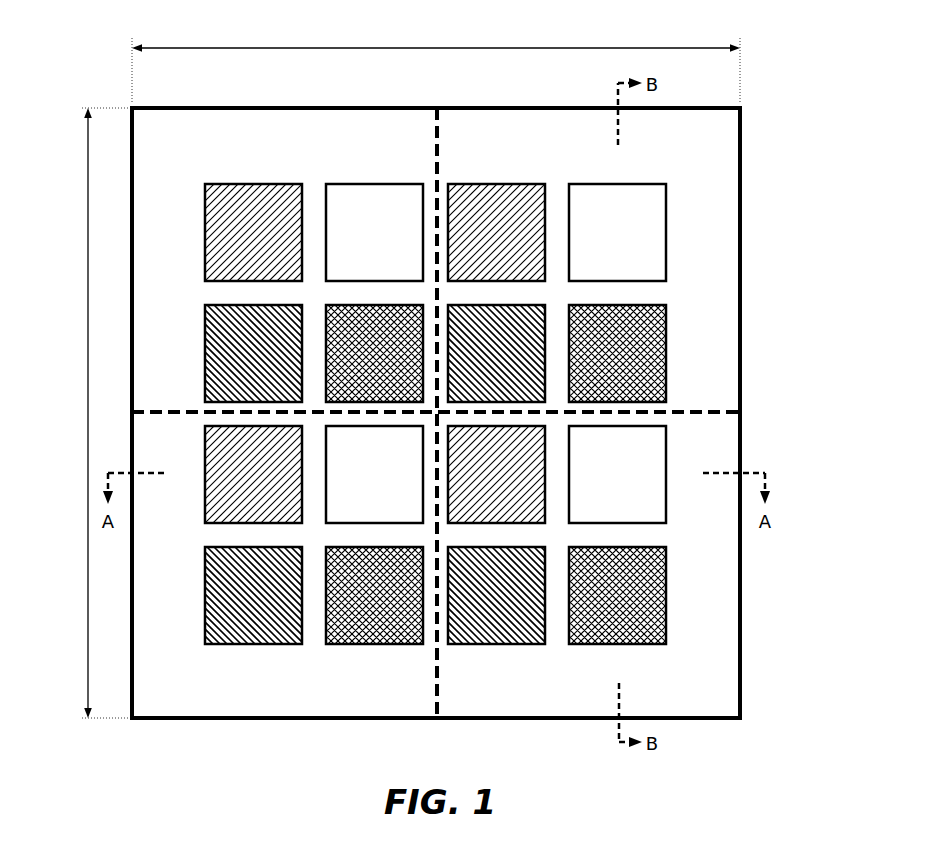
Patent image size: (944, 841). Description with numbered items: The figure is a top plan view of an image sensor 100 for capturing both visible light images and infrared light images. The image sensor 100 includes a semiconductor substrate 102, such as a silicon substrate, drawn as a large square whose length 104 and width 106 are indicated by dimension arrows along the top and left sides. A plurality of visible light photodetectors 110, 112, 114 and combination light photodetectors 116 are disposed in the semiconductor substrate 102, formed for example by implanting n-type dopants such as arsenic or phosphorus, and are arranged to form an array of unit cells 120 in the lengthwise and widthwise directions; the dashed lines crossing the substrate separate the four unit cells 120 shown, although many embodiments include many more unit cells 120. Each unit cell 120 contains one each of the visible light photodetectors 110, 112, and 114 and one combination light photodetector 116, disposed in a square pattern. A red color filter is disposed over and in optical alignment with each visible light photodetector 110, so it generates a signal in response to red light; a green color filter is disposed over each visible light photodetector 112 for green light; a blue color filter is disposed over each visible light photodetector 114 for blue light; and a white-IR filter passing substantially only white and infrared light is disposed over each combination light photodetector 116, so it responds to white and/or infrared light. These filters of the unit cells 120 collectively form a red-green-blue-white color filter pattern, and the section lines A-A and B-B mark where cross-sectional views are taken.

The image sensor 100 is at (487, 371).
The semiconductor substrate 102 is at (745, 312).
The length 104 is at (247, 45).
The width 106 is at (87, 606).
The visible light photodetector 110 is at (375, 348).
The visible light photodetector 112 is at (373, 478).
The visible light photodetector 114 is at (494, 476).
The combination light photodetector 116 is at (485, 347).
The unit cell 120 is at (457, 120).